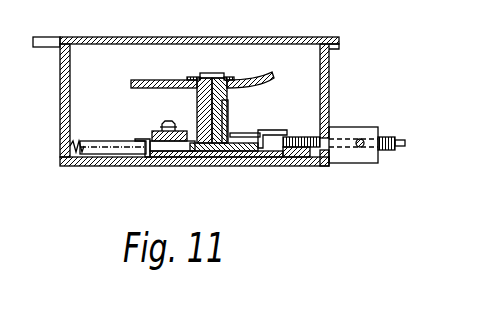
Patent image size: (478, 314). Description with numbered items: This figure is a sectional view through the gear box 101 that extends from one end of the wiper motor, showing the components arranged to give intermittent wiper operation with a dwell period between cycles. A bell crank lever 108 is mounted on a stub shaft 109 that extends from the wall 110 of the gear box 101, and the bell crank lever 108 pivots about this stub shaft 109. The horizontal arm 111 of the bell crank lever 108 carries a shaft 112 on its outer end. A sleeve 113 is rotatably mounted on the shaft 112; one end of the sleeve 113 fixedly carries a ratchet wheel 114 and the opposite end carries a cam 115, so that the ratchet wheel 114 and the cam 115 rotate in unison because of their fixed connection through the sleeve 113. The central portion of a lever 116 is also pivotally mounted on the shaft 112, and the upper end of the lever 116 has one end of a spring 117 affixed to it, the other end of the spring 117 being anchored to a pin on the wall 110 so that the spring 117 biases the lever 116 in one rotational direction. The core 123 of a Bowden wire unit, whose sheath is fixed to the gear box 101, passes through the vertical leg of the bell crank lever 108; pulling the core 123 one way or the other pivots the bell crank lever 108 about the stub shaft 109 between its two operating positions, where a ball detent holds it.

The gear box 101 is at (96, 167).
The bell crank lever 108 is at (248, 166).
The stub shaft 109 is at (288, 166).
The wall 110 is at (178, 167).
The horizontal arm 111 is at (228, 166).
The shaft 112 is at (228, 108).
The sleeve 113 is at (197, 103).
The ratchet wheel 114 is at (240, 132).
The cam 115 is at (155, 80).
The lever 116 is at (170, 160).
The spring 117 is at (118, 110).
The core 123 is at (283, 135).